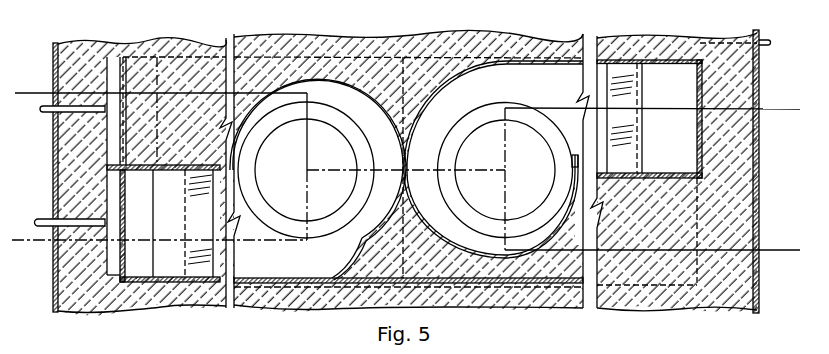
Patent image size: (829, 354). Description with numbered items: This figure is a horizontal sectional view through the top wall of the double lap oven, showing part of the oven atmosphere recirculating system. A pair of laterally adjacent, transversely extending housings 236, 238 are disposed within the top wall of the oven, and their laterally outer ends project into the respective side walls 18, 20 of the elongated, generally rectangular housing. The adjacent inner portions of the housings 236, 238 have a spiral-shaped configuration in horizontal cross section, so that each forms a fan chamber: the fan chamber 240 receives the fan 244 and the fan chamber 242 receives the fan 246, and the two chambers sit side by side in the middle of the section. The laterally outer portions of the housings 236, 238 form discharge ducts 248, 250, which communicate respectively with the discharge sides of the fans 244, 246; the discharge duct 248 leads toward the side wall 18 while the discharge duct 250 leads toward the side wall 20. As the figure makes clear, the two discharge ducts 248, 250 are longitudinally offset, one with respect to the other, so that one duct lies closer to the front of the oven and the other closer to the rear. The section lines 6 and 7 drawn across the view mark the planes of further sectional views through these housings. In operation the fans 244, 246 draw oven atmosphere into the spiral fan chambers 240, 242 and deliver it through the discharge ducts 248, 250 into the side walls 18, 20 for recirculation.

The side wall 18 is at (53, 153).
The side wall 20 is at (759, 193).
The housing 236 is at (411, 177).
The housing 238 is at (532, 60).
The fan chamber 240 is at (325, 95).
The fan chamber 242 is at (450, 97).
The fan 244 is at (350, 123).
The fan 246 is at (485, 115).
The discharge duct 248 is at (289, 265).
The discharge duct 250 is at (549, 89).
The section line 6- 6 is at (21, 209).
The section line 7- 7 is at (23, 64).